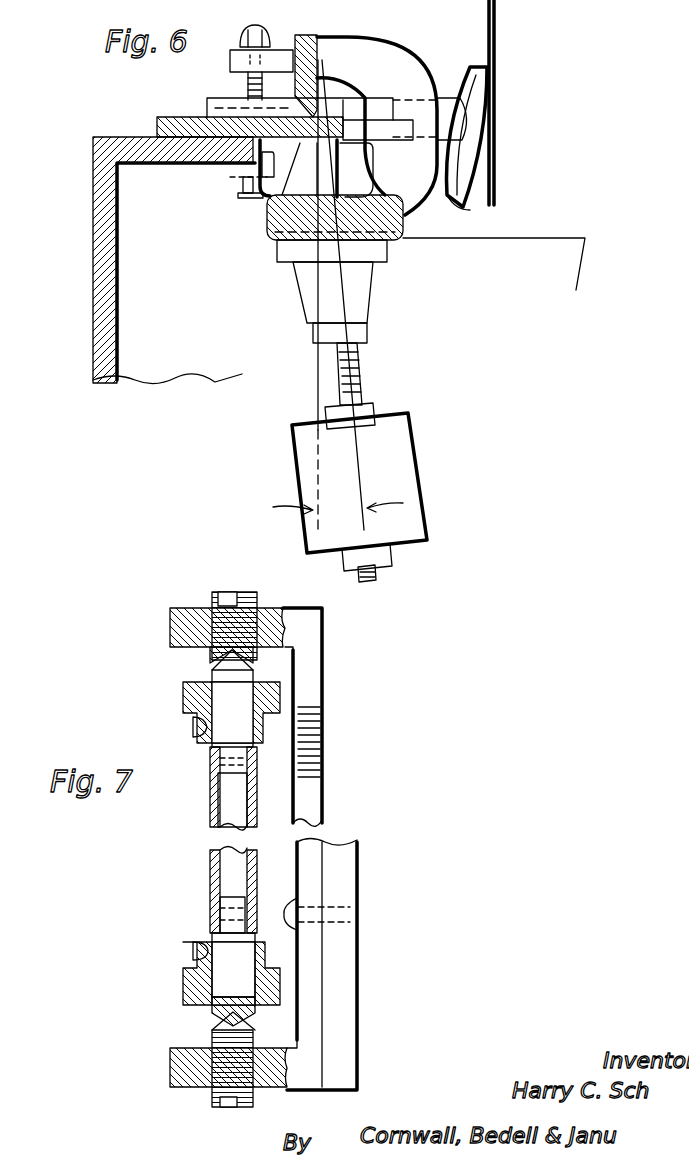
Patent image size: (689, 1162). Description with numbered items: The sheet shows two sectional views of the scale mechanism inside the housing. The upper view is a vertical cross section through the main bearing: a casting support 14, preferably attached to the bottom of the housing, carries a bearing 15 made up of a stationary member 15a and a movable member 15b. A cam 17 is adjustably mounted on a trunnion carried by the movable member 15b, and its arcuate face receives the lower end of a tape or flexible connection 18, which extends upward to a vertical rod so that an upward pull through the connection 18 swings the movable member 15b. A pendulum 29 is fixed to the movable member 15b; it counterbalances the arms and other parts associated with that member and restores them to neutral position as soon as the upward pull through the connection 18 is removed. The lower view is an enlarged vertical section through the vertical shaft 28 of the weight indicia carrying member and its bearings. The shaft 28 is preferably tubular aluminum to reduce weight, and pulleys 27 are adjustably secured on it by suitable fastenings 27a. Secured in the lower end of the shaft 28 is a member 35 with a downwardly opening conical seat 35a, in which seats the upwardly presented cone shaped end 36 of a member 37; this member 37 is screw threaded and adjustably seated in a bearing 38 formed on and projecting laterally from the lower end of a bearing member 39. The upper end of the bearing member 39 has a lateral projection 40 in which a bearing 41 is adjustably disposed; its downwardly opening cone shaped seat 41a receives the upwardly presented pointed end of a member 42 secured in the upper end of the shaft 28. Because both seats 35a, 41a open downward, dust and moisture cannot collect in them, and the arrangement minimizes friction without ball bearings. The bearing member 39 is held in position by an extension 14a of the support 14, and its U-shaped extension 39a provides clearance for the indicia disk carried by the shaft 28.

In FIG. 6, the casting support 14 is at (108, 223).
In FIG. 6, the extension of support 14a is at (528, 250).
In FIG. 7, the extension of support 14a is at (342, 863).
In FIG. 6, the bearing 15 is at (190, 93).
In FIG. 6, the stationary member 15a is at (203, 165).
In FIG. 6, the movable member 15b is at (352, 60).
In FIG. 6, the cam 17 is at (485, 135).
In FIG. 6, the tape or flexible connection 18 is at (496, 55).
In FIG. 7, the pulleys 27 is at (190, 693).
In FIG. 7, the fastenings 27a is at (197, 950).
In FIG. 7, the shaft 28 is at (212, 850).
In FIG. 6, the pendulum 29 is at (397, 463).
In FIG. 7, the member 35 is at (243, 973).
In FIG. 7, the conical seat 35a is at (213, 1010).
In FIG. 7, the cone shaped end 36 is at (227, 1028).
In FIG. 7, the member 37 is at (223, 1107).
In FIG. 7, the bearing 38 is at (180, 1083).
In FIG. 7, the bearing member 39 is at (307, 945).
In FIG. 7, the U-shaped extension 39a is at (313, 723).
In FIG. 7, the lateral projection 40 is at (170, 613).
In FIG. 7, the bearing 41 is at (213, 593).
In FIG. 7, the cone shaped seat 41a is at (210, 652).
In FIG. 7, the member 42 is at (243, 693).